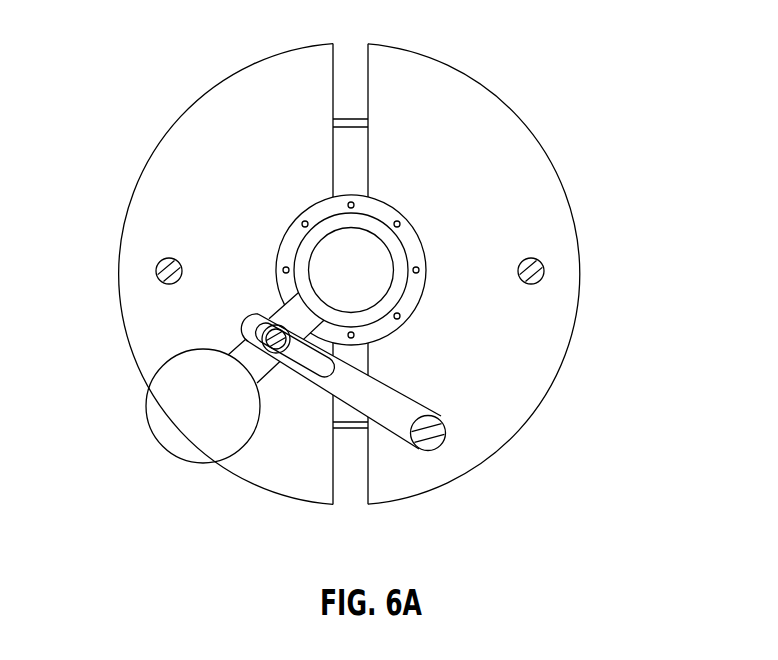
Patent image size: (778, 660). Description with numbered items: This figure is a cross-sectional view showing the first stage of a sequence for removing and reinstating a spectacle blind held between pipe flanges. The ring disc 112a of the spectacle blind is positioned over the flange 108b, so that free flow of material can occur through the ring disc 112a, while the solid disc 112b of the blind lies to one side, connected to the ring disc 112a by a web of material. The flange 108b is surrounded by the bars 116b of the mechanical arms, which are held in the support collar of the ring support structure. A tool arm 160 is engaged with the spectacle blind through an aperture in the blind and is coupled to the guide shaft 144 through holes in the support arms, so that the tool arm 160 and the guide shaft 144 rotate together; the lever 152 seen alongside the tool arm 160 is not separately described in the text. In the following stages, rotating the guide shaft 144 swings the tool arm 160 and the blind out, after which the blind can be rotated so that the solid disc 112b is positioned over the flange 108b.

The flange 108b is at (409, 241).
The ring disc 112a is at (370, 227).
The bar 116b is at (157, 270).
The solid disc 112b is at (180, 438).
The lever arm 152 is at (402, 443).
The guide shaft 144 is at (440, 447).
The tool arm 160 is at (263, 335).